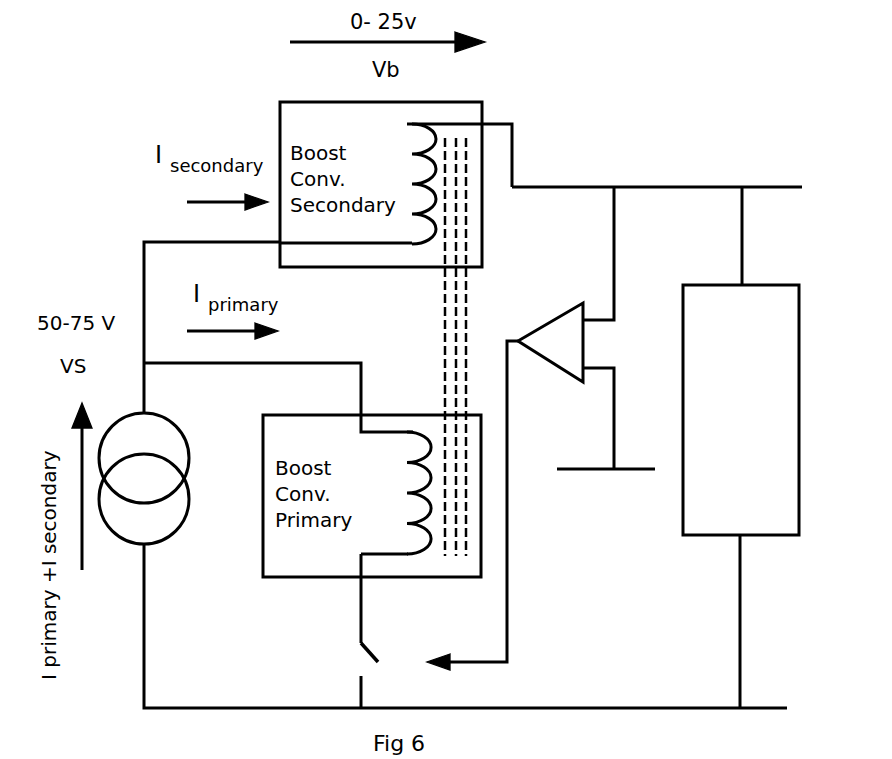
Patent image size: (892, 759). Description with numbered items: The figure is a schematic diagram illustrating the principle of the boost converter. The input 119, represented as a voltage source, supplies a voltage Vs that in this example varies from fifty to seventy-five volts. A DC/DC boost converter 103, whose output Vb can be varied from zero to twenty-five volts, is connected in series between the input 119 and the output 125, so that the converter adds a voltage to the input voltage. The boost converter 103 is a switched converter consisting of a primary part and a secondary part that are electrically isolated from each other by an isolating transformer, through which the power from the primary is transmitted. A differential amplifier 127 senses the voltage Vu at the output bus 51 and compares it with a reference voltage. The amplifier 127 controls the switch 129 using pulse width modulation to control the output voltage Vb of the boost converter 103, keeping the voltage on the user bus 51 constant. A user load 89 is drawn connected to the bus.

The output bus 51 is at (740, 178).
The user load 89 is at (725, 492).
The DC/DC boost converter 103 is at (395, 462).
The input 119 is at (155, 368).
The output 125 is at (493, 115).
The differential amplifier 127 is at (570, 335).
The switch 129 is at (365, 662).